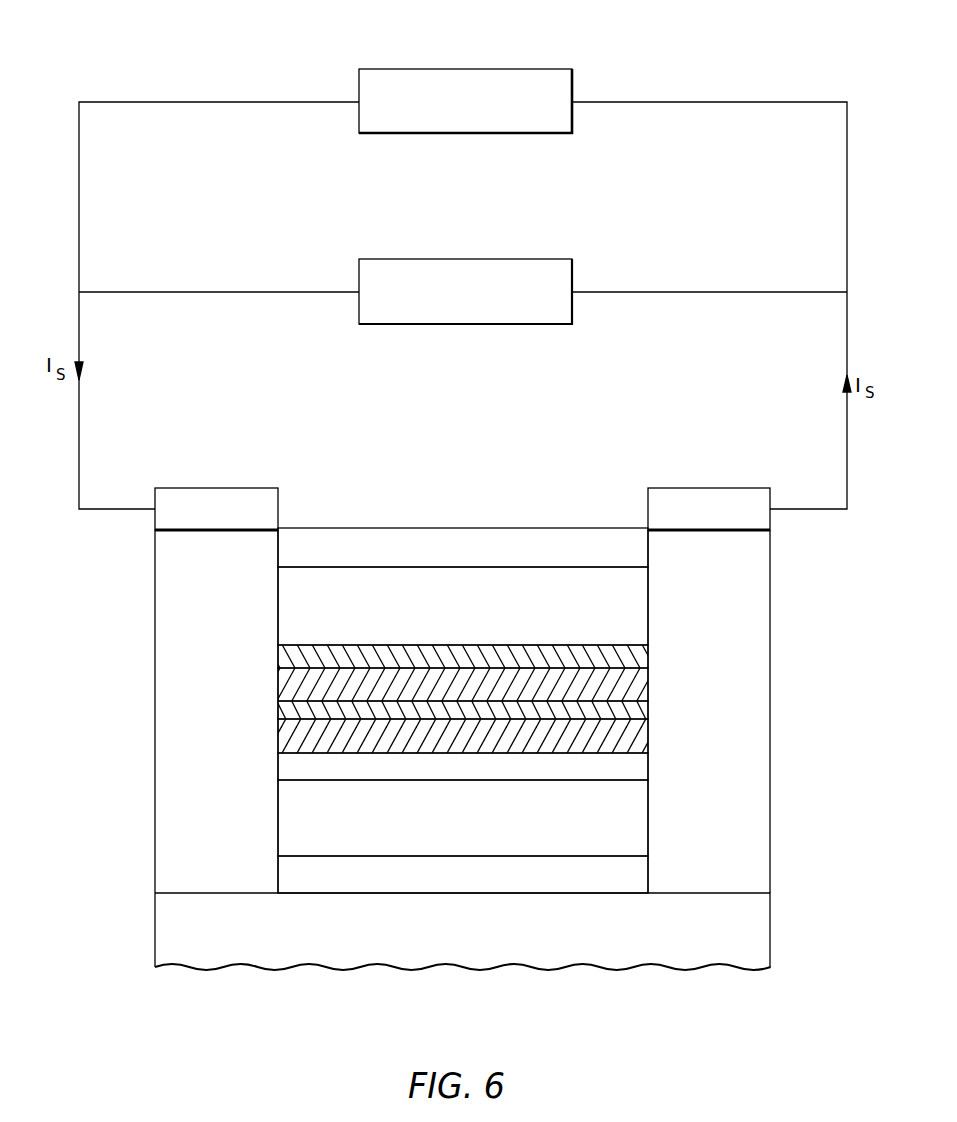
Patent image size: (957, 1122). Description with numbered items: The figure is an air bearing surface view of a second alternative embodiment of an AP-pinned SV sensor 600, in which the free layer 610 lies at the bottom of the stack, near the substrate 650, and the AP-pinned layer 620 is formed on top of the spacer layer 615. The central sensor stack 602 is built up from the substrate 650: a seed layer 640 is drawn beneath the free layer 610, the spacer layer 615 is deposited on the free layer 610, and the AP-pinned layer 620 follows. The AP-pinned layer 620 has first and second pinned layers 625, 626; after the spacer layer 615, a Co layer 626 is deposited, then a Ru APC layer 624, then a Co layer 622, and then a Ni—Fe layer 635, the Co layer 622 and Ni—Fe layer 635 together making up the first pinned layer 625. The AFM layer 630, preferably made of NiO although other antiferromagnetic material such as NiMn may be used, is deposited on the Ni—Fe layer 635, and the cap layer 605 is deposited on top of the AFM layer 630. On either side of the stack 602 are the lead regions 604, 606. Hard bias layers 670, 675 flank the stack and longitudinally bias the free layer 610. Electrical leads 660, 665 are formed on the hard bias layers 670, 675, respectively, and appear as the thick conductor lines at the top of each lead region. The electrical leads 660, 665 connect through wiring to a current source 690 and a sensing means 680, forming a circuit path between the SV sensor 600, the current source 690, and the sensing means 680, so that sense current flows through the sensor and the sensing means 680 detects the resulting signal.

The AP-pinned SV sensor 600 is at (237, 1008).
The sensor stack (active region) 602 is at (647, 480).
The first lead 604 is at (278, 480).
The second lead 606 is at (770, 480).
The cap layer 605 is at (640, 553).
The AFM layer 630 is at (640, 603).
The AP-pinned layer 620 is at (155, 753).
The first pinned layer 625 is at (155, 645).
The Ni—Fe layer 635 is at (640, 660).
The Co layer 622 is at (640, 687).
The Ru APC layer 624 is at (640, 709).
The Co layer 626 is at (640, 742).
The spacer layer 615 is at (640, 772).
The free layer 610 is at (640, 812).
The seed layer 640 is at (640, 872).
The substrate 650 is at (770, 950).
The electrical lead 660 is at (157, 521).
The electrical lead 665 is at (770, 531).
The hard bias layer 670 is at (157, 854).
The hard bias layer 675 is at (770, 857).
The sensing means 680 is at (558, 133).
The current source 690 is at (558, 324).